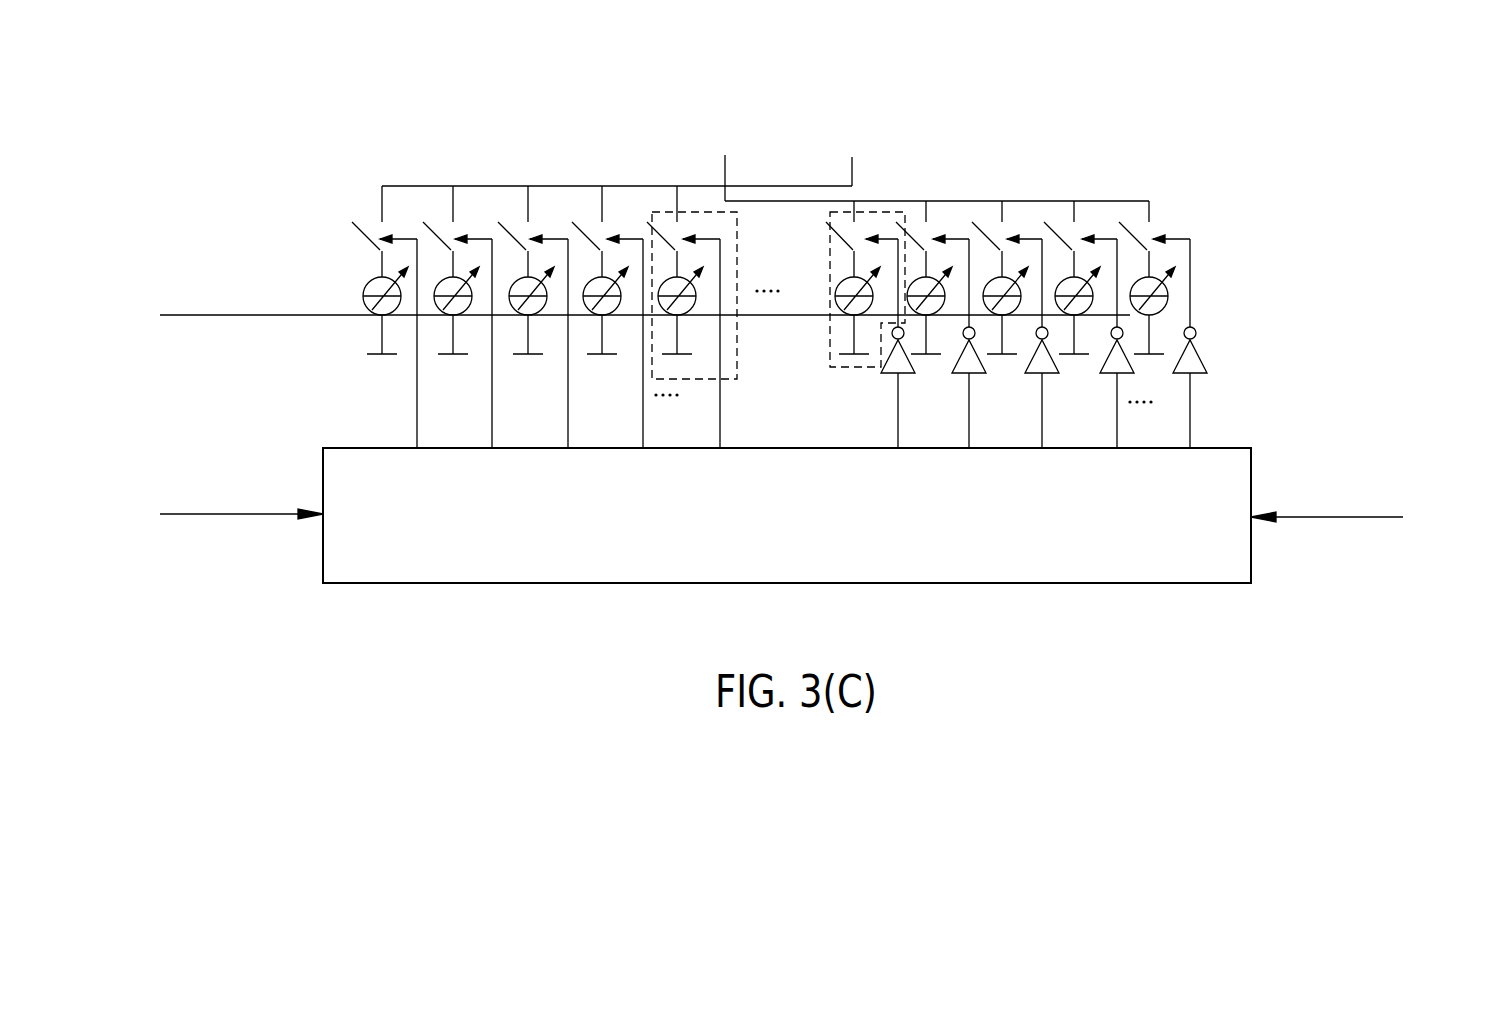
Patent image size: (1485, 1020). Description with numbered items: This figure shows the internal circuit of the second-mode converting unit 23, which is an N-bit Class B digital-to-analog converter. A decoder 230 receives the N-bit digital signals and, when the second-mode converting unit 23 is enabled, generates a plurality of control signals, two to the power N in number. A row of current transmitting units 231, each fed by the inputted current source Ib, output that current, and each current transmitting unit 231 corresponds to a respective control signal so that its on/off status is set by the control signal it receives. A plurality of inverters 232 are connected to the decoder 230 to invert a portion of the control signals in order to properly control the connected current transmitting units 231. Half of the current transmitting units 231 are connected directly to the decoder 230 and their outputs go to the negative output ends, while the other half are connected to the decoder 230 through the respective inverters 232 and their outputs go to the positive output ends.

The second-mode converting unit 23 is at (1188, 167).
The decoder 230 is at (909, 583).
The current transmitting unit 231 is at (650, 218).
The inverter 232 is at (967, 378).